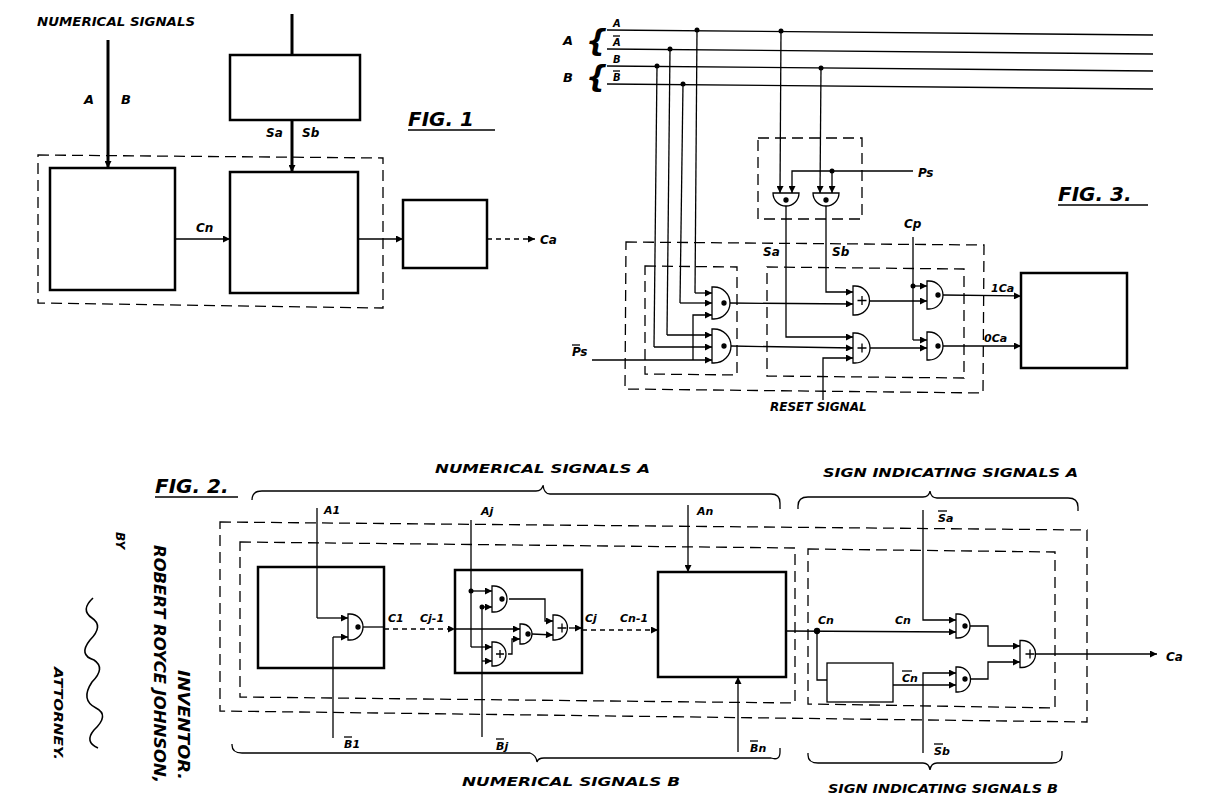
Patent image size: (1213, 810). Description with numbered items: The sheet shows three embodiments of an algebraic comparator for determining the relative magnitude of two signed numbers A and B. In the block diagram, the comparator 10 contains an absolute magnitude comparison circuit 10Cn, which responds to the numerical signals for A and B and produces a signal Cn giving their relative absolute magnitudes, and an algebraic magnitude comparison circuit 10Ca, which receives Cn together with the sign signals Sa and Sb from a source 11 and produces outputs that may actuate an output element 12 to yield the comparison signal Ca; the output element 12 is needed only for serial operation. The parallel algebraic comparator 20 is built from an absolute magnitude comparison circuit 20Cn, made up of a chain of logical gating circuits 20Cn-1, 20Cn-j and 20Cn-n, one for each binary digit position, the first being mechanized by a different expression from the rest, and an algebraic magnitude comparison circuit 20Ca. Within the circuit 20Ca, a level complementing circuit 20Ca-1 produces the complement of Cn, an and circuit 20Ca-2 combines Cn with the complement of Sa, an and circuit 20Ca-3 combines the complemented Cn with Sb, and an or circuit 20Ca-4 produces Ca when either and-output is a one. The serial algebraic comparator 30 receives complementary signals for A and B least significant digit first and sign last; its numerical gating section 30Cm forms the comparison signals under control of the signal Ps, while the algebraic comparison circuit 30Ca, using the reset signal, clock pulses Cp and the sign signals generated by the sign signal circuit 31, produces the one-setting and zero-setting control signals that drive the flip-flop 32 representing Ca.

In FIG. 1, the algebraic comparator 10 is at (370, 303).
In FIG. 1, the absolute magnitude comparison circuit 10Cn is at (153, 286).
In FIG. 1, the algebraic magnitude comparison circuit 10Ca is at (277, 288).
In FIG. 1, the source 11 is at (348, 93).
In FIG. 1, the output element 12 is at (478, 206).
In FIG. 2, the parallel algebraic comparator 20 is at (1072, 558).
In FIG. 2, the absolute magnitude comparison circuit 20Cn is at (562, 697).
In FIG. 2, the logical gating circuit 20Cn-1 is at (376, 660).
In FIG. 2, the logical gating circuit 20Cn-j is at (572, 660).
In FIG. 2, the logical gating circuit 20Cn-n is at (725, 670).
In FIG. 2, the algebraic magnitude comparison circuit 20Ca is at (1045, 705).
In FIG. 2, the level complementing circuit 20Ca-1 is at (893, 700).
In FIG. 2, the and circuit 20Ca-2 is at (970, 621).
In FIG. 2, the and circuit 20Ca-3 is at (963, 692).
In FIG. 2, the or circuit 20Ca-4 is at (1030, 645).
In FIG. 3, the serial algebraic comparator 30 is at (955, 244).
In FIG. 3, the magnitude comparison gating section 30Cm is at (681, 371).
In FIG. 3, the algebraic comparison circuit 30Ca is at (941, 372).
In FIG. 3, the sign signal circuit 31 is at (757, 164).
In FIG. 3, the output flip-flop 32 is at (1105, 293).